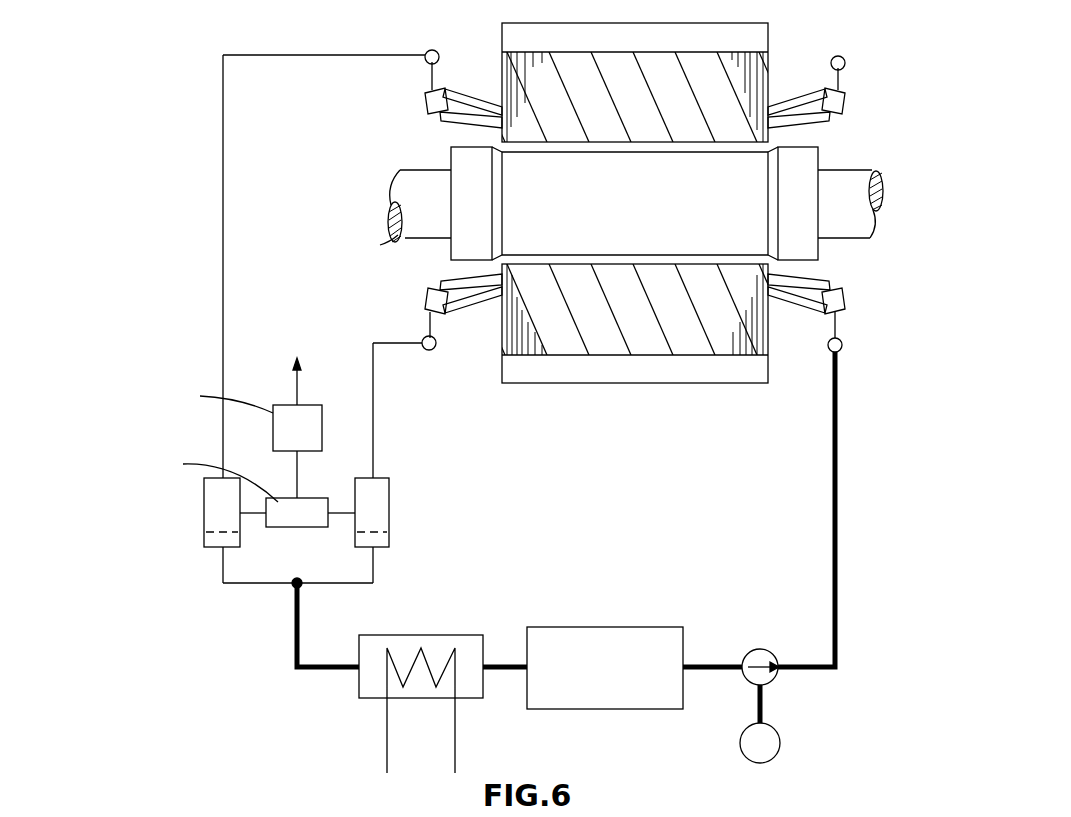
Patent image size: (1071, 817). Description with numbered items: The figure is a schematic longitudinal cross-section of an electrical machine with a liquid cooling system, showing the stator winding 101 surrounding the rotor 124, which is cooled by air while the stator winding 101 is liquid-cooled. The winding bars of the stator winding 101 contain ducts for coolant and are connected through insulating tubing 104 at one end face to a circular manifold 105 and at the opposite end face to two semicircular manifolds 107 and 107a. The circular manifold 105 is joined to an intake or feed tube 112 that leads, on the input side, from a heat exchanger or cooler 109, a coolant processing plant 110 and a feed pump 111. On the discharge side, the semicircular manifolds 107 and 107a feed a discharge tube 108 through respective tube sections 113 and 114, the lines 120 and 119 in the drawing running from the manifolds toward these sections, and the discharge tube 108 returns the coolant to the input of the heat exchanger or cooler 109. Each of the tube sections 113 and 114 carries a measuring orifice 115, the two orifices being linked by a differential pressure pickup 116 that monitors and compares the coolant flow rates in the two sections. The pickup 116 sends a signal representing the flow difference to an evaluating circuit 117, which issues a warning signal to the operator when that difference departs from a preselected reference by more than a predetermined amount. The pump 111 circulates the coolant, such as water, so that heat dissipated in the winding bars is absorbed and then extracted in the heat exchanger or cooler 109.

The stator winding 101 is at (447, 128).
The insulating tubing 104 is at (427, 102).
The circular manifold 105 is at (838, 56).
The semicircular manifold 107 is at (430, 50).
The semicircular manifold 107a is at (434, 350).
The discharge tube 108 is at (312, 672).
The heat exchanger or cooler 109 is at (441, 637).
The coolant processing plant 110 is at (636, 698).
The feed pump 111 is at (762, 649).
The intake or feed tube 112 is at (826, 509).
The tube section 113 is at (263, 587).
The tube section 114 is at (336, 587).
The measuring orifice 115 is at (204, 520).
The differential pressure pickup 116 is at (284, 522).
The evaluating circuit 117 is at (284, 448).
The coolant line 119 is at (402, 340).
The coolant line 120 is at (309, 42).
The rotor 124 is at (397, 232).